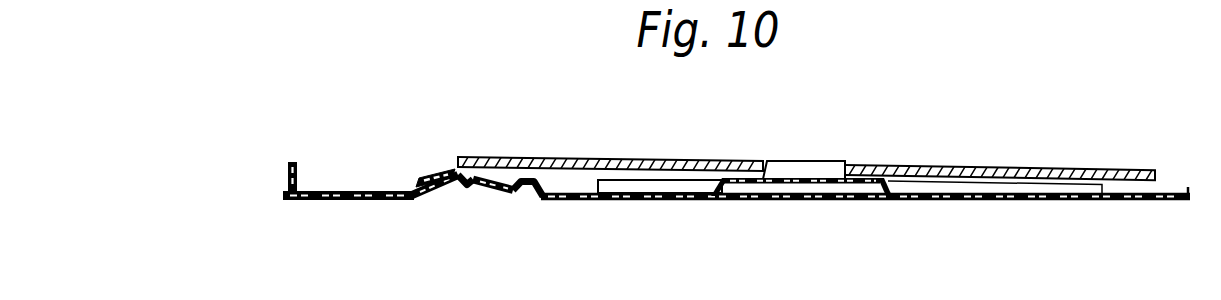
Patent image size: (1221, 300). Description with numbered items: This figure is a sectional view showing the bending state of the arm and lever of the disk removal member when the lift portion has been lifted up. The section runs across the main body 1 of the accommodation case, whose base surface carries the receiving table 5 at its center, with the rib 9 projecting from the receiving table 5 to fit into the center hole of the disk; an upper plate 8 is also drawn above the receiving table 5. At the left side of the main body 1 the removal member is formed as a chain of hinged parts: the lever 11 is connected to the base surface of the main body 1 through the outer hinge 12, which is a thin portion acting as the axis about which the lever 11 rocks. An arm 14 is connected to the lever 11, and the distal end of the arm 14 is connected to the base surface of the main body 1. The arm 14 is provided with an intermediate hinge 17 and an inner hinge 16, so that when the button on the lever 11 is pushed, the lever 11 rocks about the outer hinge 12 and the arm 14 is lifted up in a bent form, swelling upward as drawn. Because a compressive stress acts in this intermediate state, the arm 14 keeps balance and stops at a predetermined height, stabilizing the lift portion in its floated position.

The main body 1 is at (322, 191).
The outer hinge 12 is at (411, 191).
The lever 11 is at (434, 172).
The intermediate hinge 17 is at (463, 185).
The arm 14 is at (490, 192).
The inner hinge 16 is at (529, 185).
The upper plate 8 is at (710, 159).
The rib 9 is at (847, 160).
The receiving table 5 is at (743, 185).